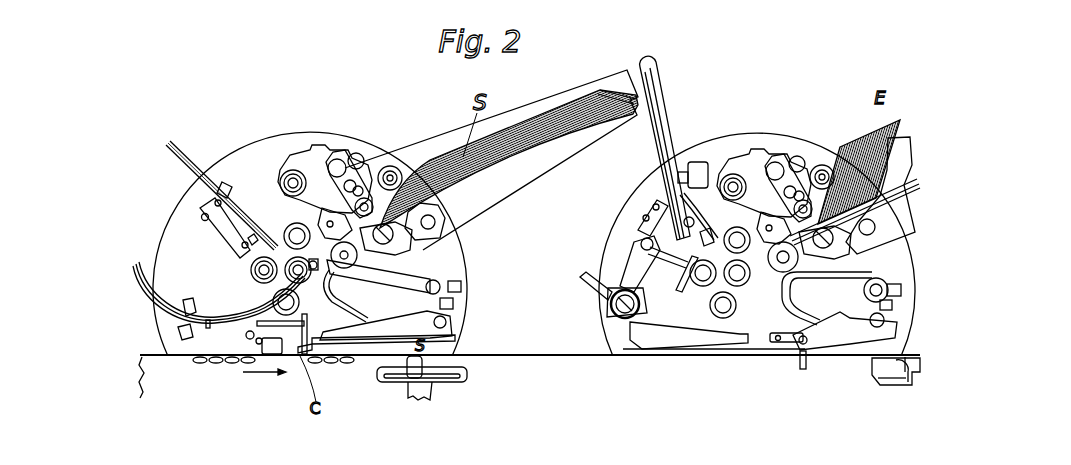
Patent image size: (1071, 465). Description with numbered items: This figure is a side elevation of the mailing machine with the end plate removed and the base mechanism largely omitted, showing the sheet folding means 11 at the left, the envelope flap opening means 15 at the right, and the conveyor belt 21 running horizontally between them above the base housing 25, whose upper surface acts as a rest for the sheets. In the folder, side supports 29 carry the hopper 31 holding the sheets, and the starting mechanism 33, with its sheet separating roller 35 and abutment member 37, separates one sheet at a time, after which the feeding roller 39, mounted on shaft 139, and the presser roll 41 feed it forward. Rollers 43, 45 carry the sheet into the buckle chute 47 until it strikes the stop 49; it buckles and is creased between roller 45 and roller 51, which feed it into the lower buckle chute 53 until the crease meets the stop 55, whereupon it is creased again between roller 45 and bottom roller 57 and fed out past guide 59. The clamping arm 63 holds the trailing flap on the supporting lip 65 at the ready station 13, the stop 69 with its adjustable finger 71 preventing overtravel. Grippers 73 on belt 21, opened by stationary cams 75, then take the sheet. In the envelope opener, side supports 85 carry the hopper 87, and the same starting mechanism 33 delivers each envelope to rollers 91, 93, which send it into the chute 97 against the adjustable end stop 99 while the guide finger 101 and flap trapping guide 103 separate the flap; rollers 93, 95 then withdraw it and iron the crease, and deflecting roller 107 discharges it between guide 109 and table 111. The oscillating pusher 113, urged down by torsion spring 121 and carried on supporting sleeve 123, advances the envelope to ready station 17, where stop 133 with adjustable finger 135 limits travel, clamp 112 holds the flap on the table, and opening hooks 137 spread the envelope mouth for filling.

The sheet folding means 11 is at (226, 140).
The ready station 13 is at (360, 372).
The envelope flap opening means 15 is at (726, 128).
The ready station 17 is at (828, 372).
The conveyor belt 21 is at (224, 368).
The base housing 25 is at (513, 355).
The side supports 29 is at (447, 258).
The supply chute or hopper 31 is at (503, 160).
The starting mechanism 33 is at (360, 138).
The sheet separating roller 35 is at (379, 168).
The abutment member 37 is at (392, 254).
The feeding roller 39 is at (357, 256).
The presser roll 41 is at (544, 194).
The roller 43 is at (288, 226).
The roller 45 is at (300, 291).
The buckle chute 47 is at (193, 172).
The stop 49 is at (230, 196).
The roller 51 is at (256, 272).
The lower buckle chute 53 is at (148, 292).
The stop 55 is at (217, 310).
The bottom roller 57 is at (308, 318).
The guide 59 is at (342, 310).
The clamping arm 63 is at (392, 326).
The supporting lip 65 is at (317, 344).
The stop 69 is at (418, 390).
The adjustable finger 71 is at (404, 372).
The grippers 73 is at (258, 351).
The stationary cams 75 is at (293, 352).
The side supports 85 is at (635, 221).
The supply chute or hopper 87 is at (895, 198).
The roller 91 is at (710, 238).
The roller 93 is at (748, 283).
The roller 95 is at (701, 286).
The chute 97 is at (662, 92).
The adjustable end stop 99 is at (684, 197).
The guide finger 101 is at (696, 219).
The flap trapping guide 103 is at (684, 264).
The deflecting roller 107 is at (737, 307).
The guide 109 is at (802, 309).
The table 111 is at (753, 354).
The clamp 112 is at (848, 333).
The oscillating pusher 113 is at (724, 332).
The torsion spring 121 is at (633, 340).
The supporting sleeve 123 is at (640, 262).
The stop 133 is at (893, 390).
The adjustable finger 135 is at (896, 374).
The opening hooks 137 is at (800, 368).
The shaft 139 is at (343, 262).